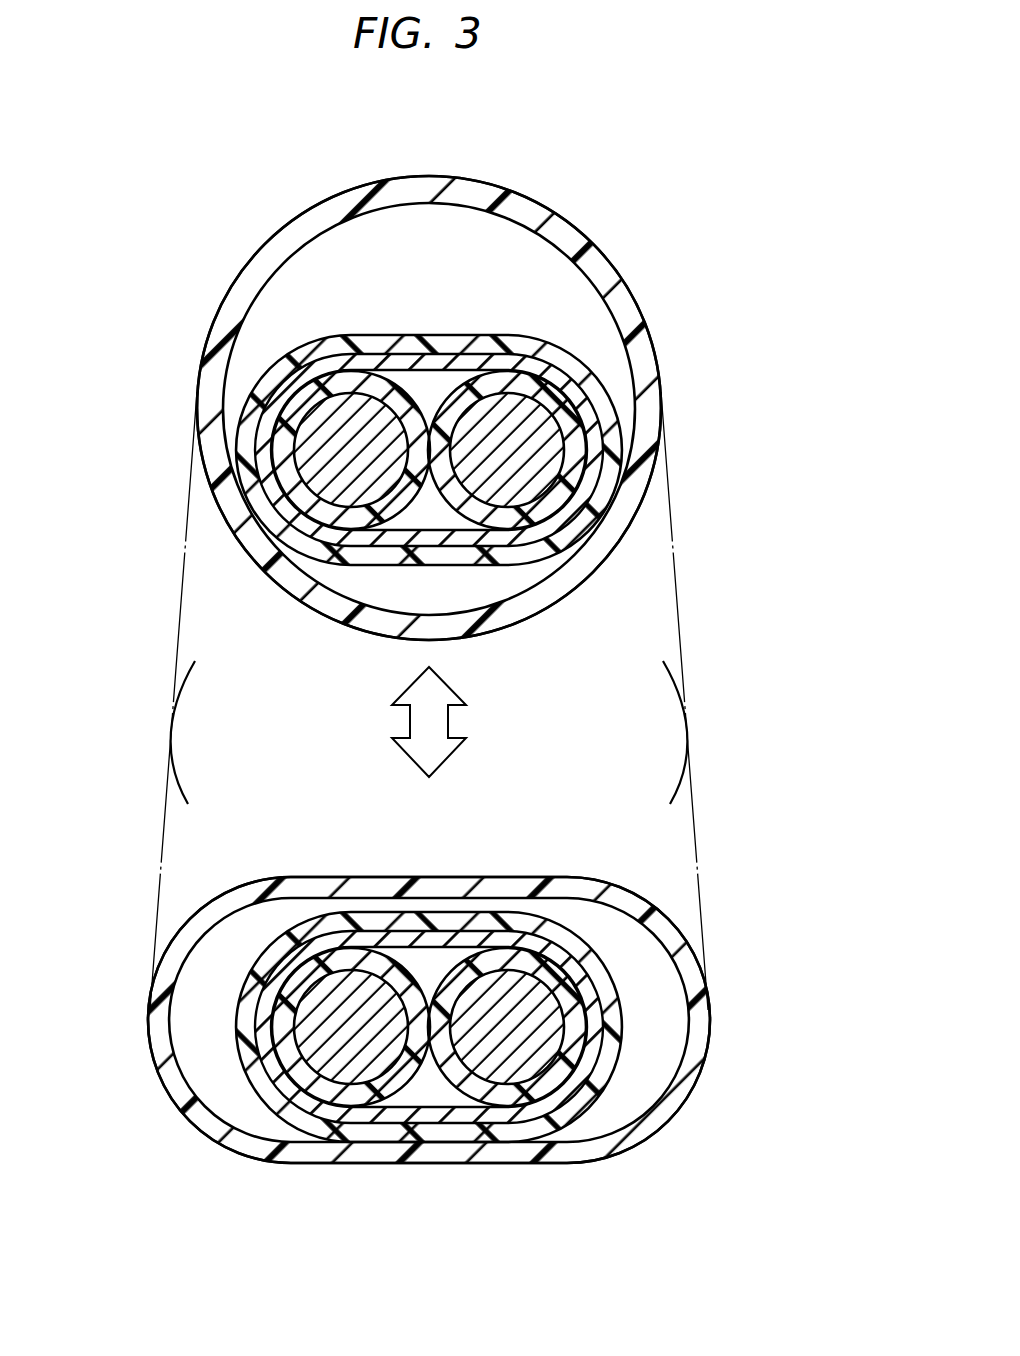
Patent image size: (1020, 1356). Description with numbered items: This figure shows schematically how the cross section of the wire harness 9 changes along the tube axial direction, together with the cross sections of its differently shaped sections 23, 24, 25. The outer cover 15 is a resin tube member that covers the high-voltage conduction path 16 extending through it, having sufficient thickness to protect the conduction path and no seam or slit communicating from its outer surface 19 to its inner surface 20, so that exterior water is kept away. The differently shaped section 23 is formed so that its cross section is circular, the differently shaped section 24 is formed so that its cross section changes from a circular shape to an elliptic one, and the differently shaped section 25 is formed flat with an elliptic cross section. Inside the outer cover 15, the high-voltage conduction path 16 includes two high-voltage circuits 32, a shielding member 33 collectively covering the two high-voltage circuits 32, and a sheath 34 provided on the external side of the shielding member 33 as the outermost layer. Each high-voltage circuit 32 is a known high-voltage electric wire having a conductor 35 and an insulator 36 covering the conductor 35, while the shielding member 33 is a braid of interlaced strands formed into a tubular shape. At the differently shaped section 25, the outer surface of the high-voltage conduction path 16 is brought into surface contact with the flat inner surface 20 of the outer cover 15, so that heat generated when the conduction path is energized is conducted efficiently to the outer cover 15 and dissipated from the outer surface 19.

The wire harness 9 is at (667, 170).
The outer cover 15 is at (588, 237).
The high-voltage conduction path 16 is at (547, 338).
The outer surface 19 is at (557, 600).
The inner surface 20 is at (535, 568).
The differently shaped section 23 is at (252, 568).
The differently shaped section 24 is at (183, 670).
The differently shaped section 25 is at (206, 906).
The high-voltage circuit 32 is at (222, 141).
The shielding member 33 is at (459, 362).
The sheath 34 is at (485, 340).
The conductor 35 is at (323, 417).
The insulator 36 is at (337, 383).